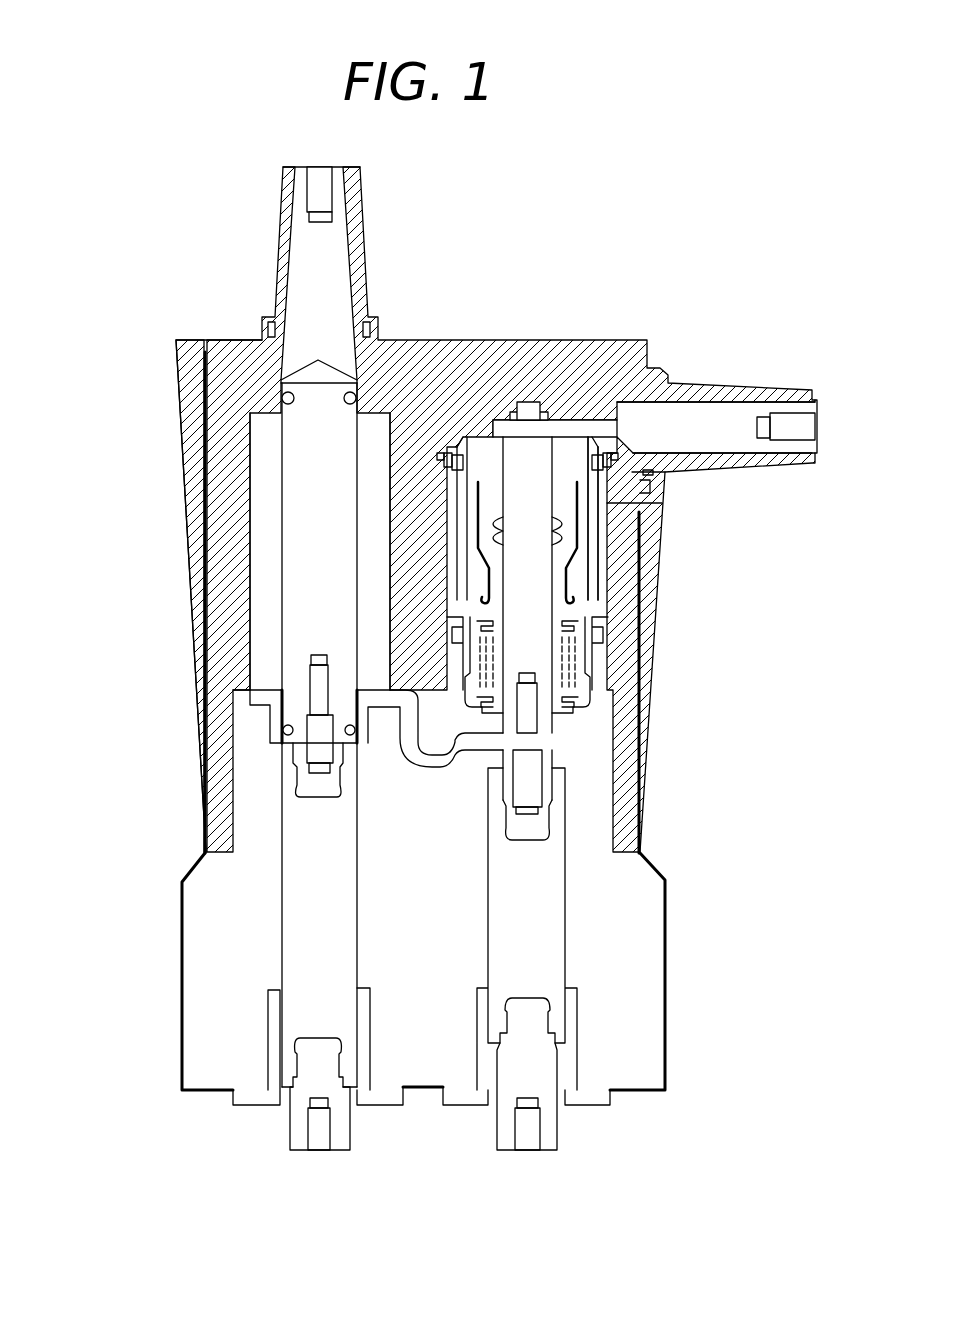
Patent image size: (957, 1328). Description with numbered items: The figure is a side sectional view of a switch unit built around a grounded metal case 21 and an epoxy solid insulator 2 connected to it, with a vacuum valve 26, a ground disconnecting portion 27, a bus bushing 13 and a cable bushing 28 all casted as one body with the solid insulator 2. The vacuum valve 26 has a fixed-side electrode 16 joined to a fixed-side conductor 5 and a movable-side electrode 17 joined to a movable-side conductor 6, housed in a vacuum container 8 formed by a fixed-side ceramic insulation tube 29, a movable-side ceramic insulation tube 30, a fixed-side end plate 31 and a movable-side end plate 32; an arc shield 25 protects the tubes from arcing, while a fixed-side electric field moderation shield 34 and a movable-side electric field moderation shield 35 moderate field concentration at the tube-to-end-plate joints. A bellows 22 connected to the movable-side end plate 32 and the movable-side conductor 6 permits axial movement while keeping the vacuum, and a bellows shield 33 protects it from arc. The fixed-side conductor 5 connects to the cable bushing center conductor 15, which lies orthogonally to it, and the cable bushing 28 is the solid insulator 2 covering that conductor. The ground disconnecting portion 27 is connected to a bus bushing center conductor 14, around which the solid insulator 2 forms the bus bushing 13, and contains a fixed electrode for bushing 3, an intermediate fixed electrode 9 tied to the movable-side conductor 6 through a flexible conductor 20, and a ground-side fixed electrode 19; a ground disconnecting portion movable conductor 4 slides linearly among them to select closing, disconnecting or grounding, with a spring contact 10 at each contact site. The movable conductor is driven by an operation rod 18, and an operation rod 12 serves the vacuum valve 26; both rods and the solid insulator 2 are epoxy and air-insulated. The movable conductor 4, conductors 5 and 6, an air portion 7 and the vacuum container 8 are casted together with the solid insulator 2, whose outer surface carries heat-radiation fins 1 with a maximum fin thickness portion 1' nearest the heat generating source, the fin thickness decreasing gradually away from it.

The heat-radiation fin 1 is at (196, 509).
The maximum fin thickness portion 1' is at (181, 585).
The solid insulator 2 is at (520, 360).
The fixed electrode for bushing 3 is at (270, 378).
The ground disconnecting portion movable conductor 4 is at (305, 520).
The fixed-side conductor 5 is at (538, 453).
The movable-side conductor 6 is at (528, 655).
The air portion 7 is at (263, 457).
The vacuum container 8 is at (600, 602).
The intermediate fixed electrode 9 is at (262, 692).
The spring contact 10 is at (348, 390).
The operation rod for the vacuum valve 12 is at (543, 943).
The bus bushing 13 is at (353, 226).
The bus bushing center conductor 14 is at (313, 263).
The cable bushing center conductor 15 is at (712, 422).
The fixed-side electrode 16 is at (607, 505).
The movable-side electrode 17 is at (537, 540).
The operation rod for the ground disconnecting portion 18 is at (310, 943).
The ground-side fixed electrode (guide) 19 is at (248, 1098).
The flexible conductor 20 is at (403, 755).
The metal case 21 is at (667, 1092).
The bellows 22 is at (558, 635).
The arc shield 25 is at (612, 450).
The vacuum valve 26 is at (565, 453).
The ground disconnecting portion 27 is at (213, 662).
The cable bushing 28 is at (768, 388).
The fixed-side ceramic insulation tube 29 is at (600, 527).
The movable-side ceramic insulation tube 30 is at (600, 577).
The fixed-side end plate 31 is at (468, 440).
The movable-side end plate 32 is at (580, 638).
The bellows shield 33 is at (605, 622).
The fixed-side electric field moderation shield 34 is at (437, 453).
The movable-side electric field moderation shield 35 is at (600, 647).